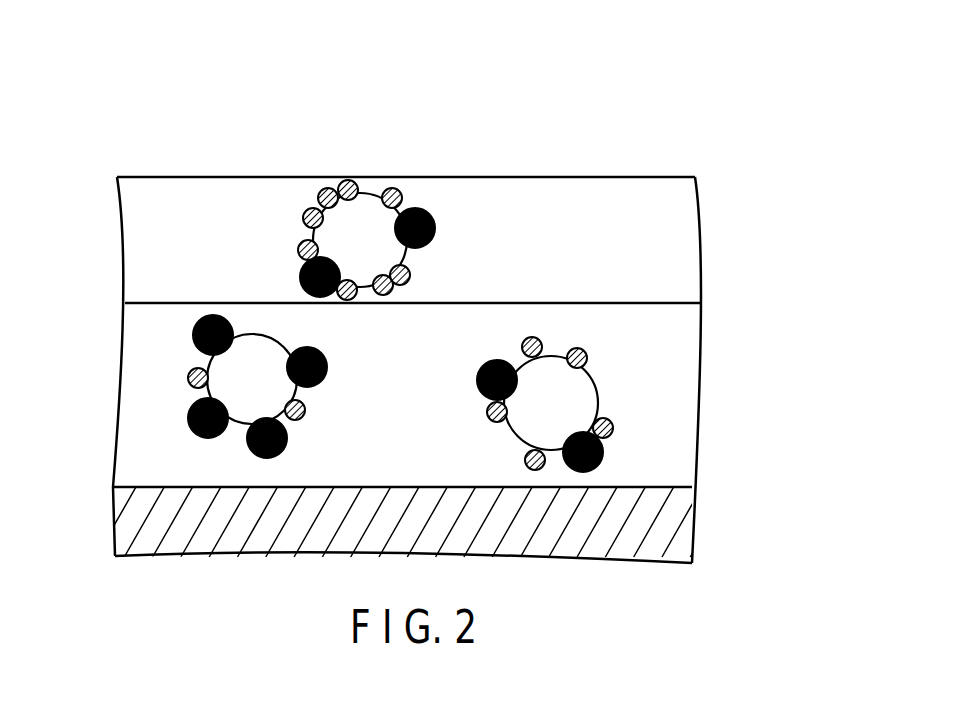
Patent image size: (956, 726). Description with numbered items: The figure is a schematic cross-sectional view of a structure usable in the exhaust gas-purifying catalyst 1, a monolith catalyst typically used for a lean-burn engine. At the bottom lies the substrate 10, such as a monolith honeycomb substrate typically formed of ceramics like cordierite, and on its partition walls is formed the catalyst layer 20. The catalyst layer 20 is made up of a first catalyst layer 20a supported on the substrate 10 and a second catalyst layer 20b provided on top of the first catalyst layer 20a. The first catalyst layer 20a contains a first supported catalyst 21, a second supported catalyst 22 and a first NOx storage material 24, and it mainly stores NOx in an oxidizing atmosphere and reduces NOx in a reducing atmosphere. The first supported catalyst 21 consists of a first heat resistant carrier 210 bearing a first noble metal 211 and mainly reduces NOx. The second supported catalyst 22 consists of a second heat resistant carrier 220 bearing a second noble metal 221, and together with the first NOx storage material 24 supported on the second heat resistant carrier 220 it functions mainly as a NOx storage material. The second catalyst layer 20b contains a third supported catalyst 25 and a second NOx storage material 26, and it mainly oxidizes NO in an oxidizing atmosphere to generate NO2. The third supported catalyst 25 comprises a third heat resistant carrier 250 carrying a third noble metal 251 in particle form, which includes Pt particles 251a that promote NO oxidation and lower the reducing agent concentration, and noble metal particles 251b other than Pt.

The exhaust gas-purifying catalyst 1 is at (678, 97).
The substrate 10 is at (663, 532).
The catalyst layer 20 is at (469, 370).
The first catalyst layer 20a is at (451, 317).
The second catalyst layer 20b is at (672, 237).
The first supported catalyst 21 is at (625, 408).
The first heat resistant carrier 210 is at (546, 388).
The first noble metal 211 is at (614, 430).
The second supported catalyst 22 is at (192, 347).
The second heat resistant carrier 220 is at (242, 393).
The second noble metal 221 is at (187, 376).
The first NOx storage material 24 is at (192, 338).
The third supported catalyst 25 is at (308, 181).
The third heat resistant carrier 250 is at (340, 240).
The third noble metal 251 is at (345, 181).
The Pt particles 251a is at (326, 186).
The noble metal particles other than Pt 251b is at (375, 188).
The second NOx storage material 26 is at (302, 268).